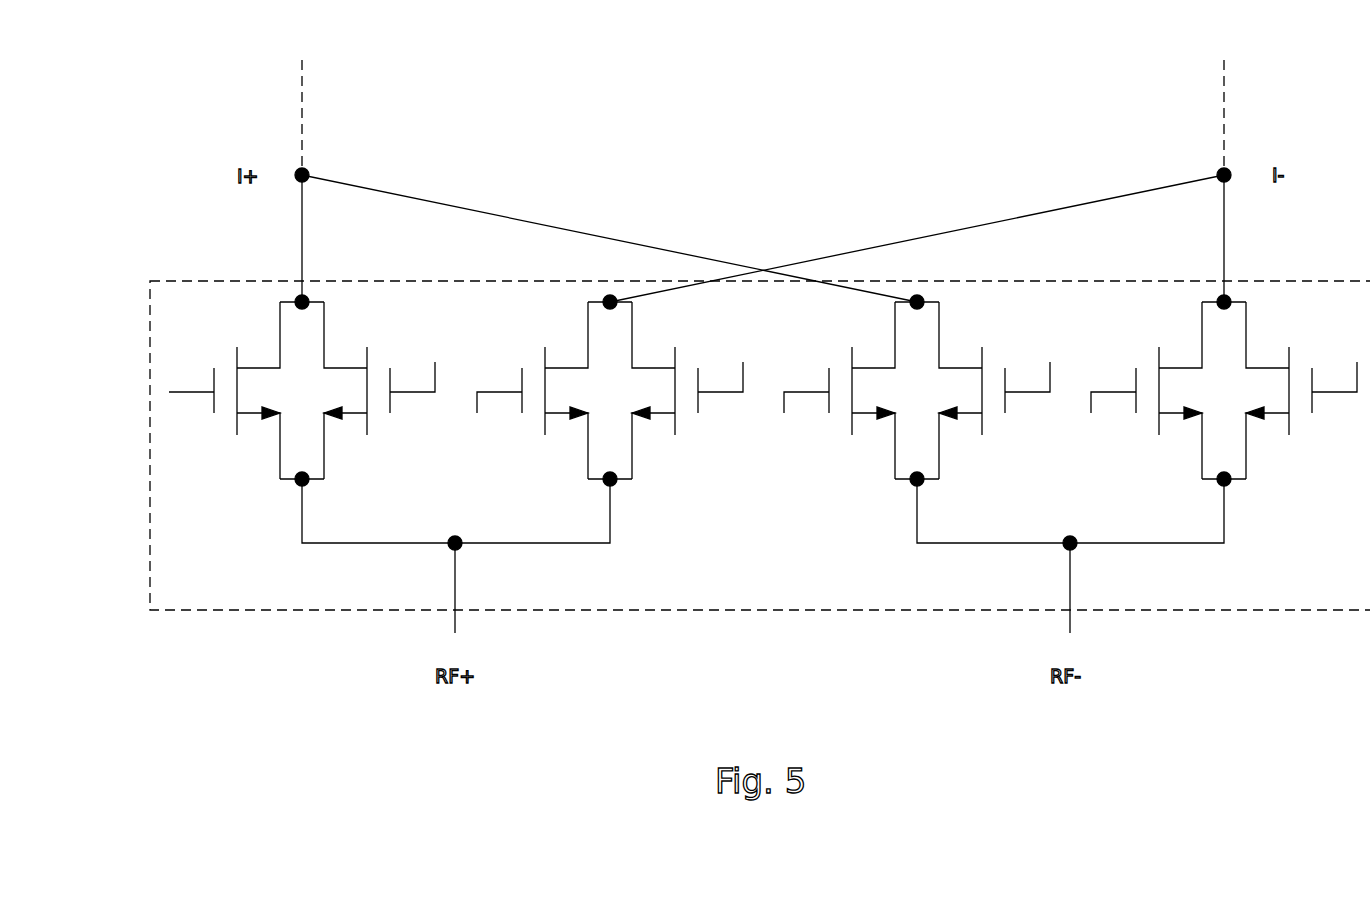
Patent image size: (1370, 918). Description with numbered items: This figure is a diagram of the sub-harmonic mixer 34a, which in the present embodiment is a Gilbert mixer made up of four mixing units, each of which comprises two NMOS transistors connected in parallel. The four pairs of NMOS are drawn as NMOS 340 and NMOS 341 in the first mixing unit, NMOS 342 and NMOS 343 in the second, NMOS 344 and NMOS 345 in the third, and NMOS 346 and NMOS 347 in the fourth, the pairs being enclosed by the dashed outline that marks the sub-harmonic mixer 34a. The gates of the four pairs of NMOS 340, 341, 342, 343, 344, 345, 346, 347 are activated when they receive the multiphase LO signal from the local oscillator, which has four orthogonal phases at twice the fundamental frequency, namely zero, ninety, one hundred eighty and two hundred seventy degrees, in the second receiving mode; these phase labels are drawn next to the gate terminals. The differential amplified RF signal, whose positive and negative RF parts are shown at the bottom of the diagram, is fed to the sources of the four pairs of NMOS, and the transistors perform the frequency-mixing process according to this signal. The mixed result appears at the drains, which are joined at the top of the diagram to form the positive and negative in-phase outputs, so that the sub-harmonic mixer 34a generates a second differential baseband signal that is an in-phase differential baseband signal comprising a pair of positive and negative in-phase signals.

The sub-harmonic mixer 34a is at (148, 338).
The NMOS 340 is at (263, 323).
The NMOS 341 is at (362, 462).
The NMOS 342 is at (555, 320).
The NMOS 343 is at (653, 458).
The NMOS 344 is at (860, 448).
The NMOS 345 is at (990, 328).
The NMOS 346 is at (1142, 443).
The NMOS 347 is at (1274, 323).